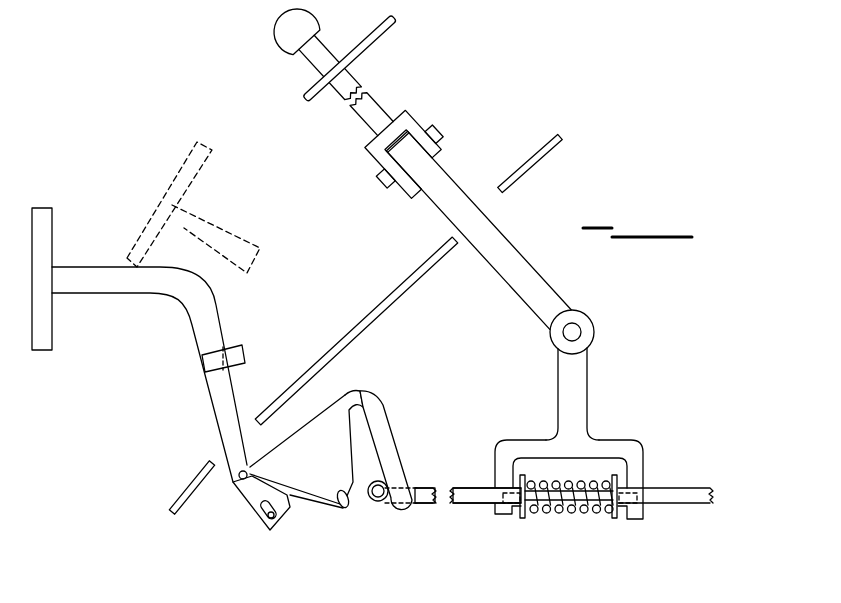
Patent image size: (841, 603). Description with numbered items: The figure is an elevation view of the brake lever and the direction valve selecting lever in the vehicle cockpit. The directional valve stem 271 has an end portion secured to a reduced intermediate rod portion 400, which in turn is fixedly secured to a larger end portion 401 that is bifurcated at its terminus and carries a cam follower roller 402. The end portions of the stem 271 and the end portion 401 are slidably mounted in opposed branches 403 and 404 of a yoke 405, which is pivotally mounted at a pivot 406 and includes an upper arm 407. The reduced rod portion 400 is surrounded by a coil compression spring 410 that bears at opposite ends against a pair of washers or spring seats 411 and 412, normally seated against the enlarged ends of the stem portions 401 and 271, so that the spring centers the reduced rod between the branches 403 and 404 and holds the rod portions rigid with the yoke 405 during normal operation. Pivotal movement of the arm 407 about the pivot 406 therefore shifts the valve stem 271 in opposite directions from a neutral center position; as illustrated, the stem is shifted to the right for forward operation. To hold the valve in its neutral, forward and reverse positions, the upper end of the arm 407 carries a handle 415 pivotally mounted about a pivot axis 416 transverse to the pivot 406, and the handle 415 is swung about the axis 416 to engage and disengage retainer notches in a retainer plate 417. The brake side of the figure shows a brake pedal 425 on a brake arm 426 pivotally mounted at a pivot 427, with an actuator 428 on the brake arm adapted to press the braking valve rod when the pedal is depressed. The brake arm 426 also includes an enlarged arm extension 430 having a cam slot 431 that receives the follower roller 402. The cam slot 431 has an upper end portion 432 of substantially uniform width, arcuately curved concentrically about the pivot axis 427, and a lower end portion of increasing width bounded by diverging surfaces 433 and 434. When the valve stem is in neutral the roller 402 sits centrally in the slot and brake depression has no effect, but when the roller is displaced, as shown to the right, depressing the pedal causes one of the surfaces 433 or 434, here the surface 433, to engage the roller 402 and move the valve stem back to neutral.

The reduced intermediate rod portion 400 is at (567, 470).
The larger end portion 401 is at (469, 503).
The cam follower roller 402 is at (375, 501).
The yoke branch 403 is at (503, 463).
The yoke branch 404 is at (641, 476).
The yoke 405 is at (580, 394).
The pivot 406 is at (579, 333).
The upper arm 407 is at (503, 268).
The coil compression spring 410 is at (564, 512).
The washer or spring seat 411 is at (523, 518).
The washer or spring seat 412 is at (616, 518).
The handle 415 is at (374, 102).
The pivot axis 416 is at (445, 122).
The retainer plate 417 is at (377, 47).
The brake pedal 425 is at (49, 338).
The brake arm 426 is at (192, 322).
The pivot 427 is at (240, 484).
The actuator 428 is at (267, 523).
The enlarged arm extension 430 is at (307, 424).
The cam slot 431 is at (378, 390).
The upper end portion 432 is at (353, 443).
The diverging surface 433 is at (404, 470).
The diverging surface 434 is at (343, 507).
The directional valve stem 271 is at (708, 503).